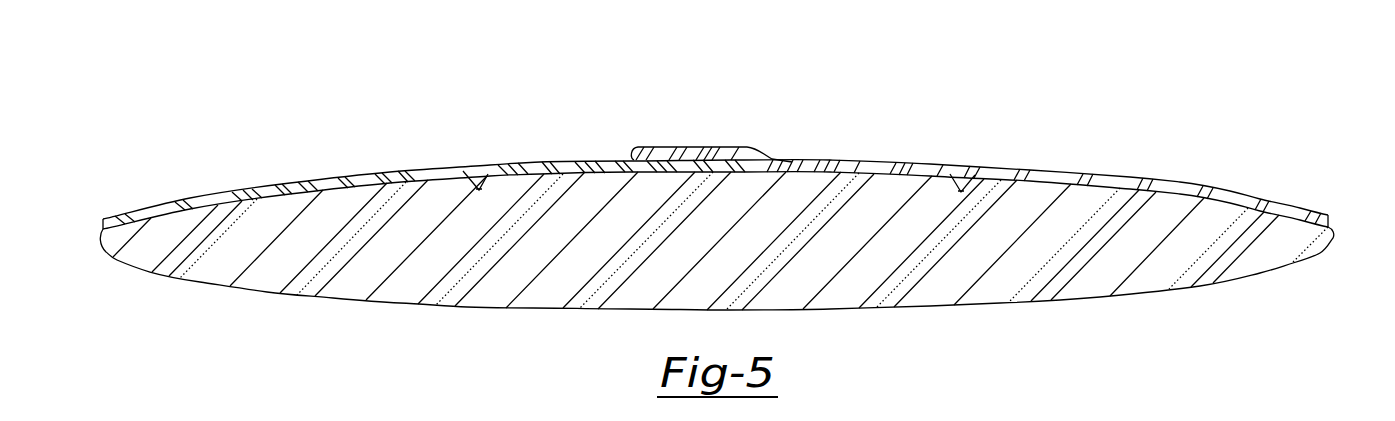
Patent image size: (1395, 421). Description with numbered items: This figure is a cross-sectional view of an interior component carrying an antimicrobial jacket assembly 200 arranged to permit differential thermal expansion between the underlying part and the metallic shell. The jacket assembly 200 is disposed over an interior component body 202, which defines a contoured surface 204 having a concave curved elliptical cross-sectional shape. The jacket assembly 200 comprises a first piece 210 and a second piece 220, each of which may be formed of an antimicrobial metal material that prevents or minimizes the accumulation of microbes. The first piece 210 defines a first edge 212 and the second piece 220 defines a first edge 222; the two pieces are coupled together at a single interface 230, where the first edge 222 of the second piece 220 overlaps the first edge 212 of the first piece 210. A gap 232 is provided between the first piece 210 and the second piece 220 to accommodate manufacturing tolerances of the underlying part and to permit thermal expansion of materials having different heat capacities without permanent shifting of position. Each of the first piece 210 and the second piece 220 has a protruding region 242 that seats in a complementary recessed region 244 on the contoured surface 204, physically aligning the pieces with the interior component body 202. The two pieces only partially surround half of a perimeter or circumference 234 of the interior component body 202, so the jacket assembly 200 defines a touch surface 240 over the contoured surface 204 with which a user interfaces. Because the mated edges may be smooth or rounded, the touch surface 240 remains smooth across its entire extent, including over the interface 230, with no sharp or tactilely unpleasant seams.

The antimicrobial jacket assembly 200 is at (222, 128).
The interior component body 202 is at (1157, 208).
The contoured surface 204 is at (980, 176).
The first piece 210 is at (538, 168).
The first edge 212 is at (750, 157).
The second piece 220 is at (1280, 208).
The first edge 222 is at (636, 150).
The interface 230 is at (686, 118).
The gap 232 is at (720, 165).
The perimeter or circumference 234 is at (1200, 285).
The touch surface 240 is at (426, 167).
The protruding region 242 is at (470, 171).
The recessed regions 244 is at (479, 190).